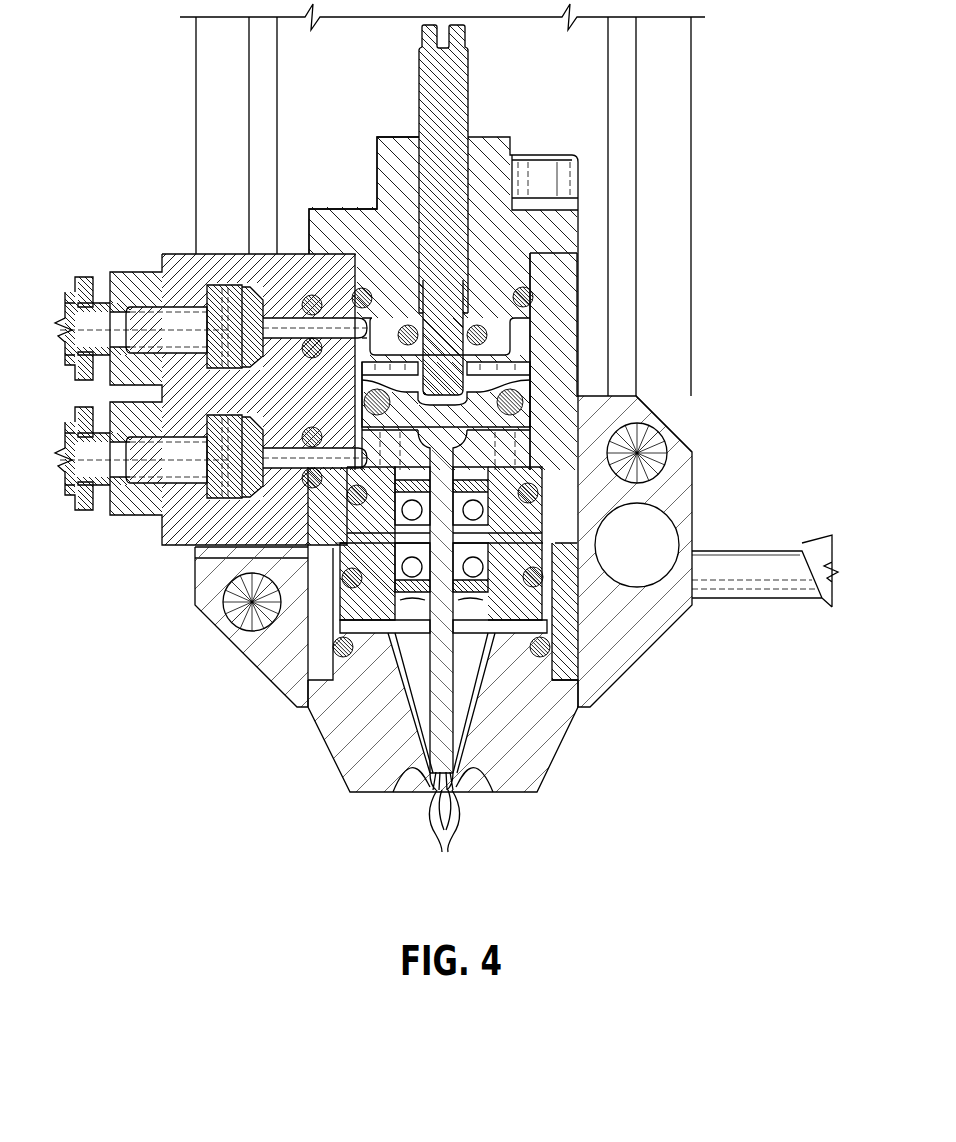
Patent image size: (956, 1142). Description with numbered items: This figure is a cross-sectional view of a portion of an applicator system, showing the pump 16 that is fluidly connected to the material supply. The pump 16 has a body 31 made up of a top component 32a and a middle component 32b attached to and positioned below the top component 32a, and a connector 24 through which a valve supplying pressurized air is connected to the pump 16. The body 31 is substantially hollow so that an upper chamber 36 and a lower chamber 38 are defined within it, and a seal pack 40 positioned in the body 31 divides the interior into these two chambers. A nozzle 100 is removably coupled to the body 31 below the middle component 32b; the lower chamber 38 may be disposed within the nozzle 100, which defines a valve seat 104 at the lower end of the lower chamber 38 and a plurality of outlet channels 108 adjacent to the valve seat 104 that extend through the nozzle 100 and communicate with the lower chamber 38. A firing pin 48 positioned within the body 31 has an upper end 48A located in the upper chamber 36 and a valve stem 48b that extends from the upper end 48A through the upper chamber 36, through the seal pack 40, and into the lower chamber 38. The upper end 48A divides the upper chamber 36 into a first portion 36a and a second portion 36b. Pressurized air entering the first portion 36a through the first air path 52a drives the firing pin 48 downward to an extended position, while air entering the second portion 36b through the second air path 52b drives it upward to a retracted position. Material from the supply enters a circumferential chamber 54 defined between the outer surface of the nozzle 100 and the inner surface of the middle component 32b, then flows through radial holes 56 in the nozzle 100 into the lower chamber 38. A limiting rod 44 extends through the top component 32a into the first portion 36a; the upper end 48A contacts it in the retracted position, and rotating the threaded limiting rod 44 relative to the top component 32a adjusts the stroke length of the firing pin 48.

The pump 16 is at (577, 232).
The connector 24 is at (185, 267).
The body 31 is at (535, 328).
The top component 32a is at (377, 170).
The middle component 32b is at (317, 623).
The upper chamber 36 is at (523, 443).
The first portion of the upper chamber 36a is at (525, 345).
The second portion of the upper chamber 36b is at (667, 423).
The lower chamber 38 is at (493, 665).
The seal pack 40 is at (540, 537).
The limiting rod 44 is at (418, 70).
The firing pin 48 is at (520, 365).
The upper end of the firing pin 48A is at (362, 425).
The valve stem 48b is at (423, 770).
The first air path 52a is at (148, 318).
The second air path 52b is at (150, 467).
The circumferential chamber 54 is at (527, 623).
The radial holes 56 is at (522, 633).
The nozzle 100 is at (332, 747).
The valve seat 104 is at (463, 767).
The outlet channels 108 is at (449, 832).